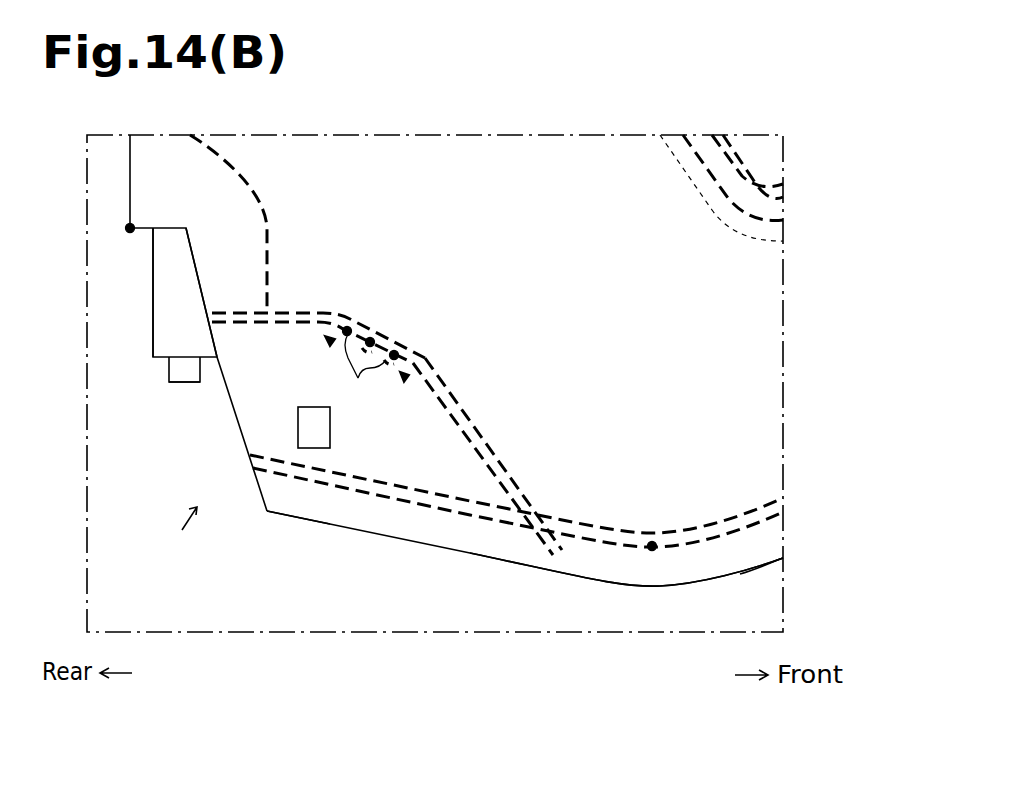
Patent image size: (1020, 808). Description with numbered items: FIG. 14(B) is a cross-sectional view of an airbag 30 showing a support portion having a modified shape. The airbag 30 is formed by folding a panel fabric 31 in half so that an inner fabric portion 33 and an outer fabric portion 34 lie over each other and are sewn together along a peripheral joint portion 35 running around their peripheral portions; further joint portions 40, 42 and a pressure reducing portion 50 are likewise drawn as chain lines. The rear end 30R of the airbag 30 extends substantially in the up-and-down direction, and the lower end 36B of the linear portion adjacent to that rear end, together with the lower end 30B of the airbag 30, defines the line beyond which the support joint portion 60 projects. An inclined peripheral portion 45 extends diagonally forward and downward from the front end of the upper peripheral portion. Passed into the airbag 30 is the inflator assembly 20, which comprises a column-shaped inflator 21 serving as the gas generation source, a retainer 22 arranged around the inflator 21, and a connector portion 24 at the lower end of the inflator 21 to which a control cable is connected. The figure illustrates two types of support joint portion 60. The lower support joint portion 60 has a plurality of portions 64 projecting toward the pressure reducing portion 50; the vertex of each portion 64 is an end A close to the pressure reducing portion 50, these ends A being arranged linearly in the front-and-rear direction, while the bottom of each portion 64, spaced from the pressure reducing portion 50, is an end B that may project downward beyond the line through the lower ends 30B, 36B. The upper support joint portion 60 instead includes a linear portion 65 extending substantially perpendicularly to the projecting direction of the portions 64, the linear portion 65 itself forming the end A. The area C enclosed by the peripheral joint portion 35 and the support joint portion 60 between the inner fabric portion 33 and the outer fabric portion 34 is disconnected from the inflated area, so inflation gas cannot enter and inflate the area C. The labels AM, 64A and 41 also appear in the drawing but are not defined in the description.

The rear end 30R is at (130, 138).
The lower end of the linear portion 36B is at (130, 230).
The joint portion 40 is at (267, 220).
The inflator assembly 20 is at (153, 332).
The retainer 22 is at (121, 302).
The inflator 21 is at (182, 382).
The connector portion 24 is at (180, 416).
The inclined peripheral portion 45 is at (245, 437).
The area C is at (314, 427).
The arm direction AM is at (182, 534).
The inner fabric portion 33 is at (299, 498).
The support joint portion 60 is at (475, 452).
The portions projecting toward the pressure reducing portion 64 is at (408, 361).
The upper end of inclined wall 64A is at (347, 327).
The linear portion 65 is at (383, 342).
The end A is at (365, 368).
The end B is at (328, 342).
The panel fabric 31 is at (585, 558).
The outer fabric portion 34 is at (565, 569).
The airbag 30 is at (712, 580).
The peripheral joint portion 35 is at (741, 535).
The lower end of the airbag 30B is at (652, 548).
The joint portion 42 is at (704, 191).
The hidden line of cover 41 is at (704, 213).
The pressure reducing portion 50 is at (752, 192).